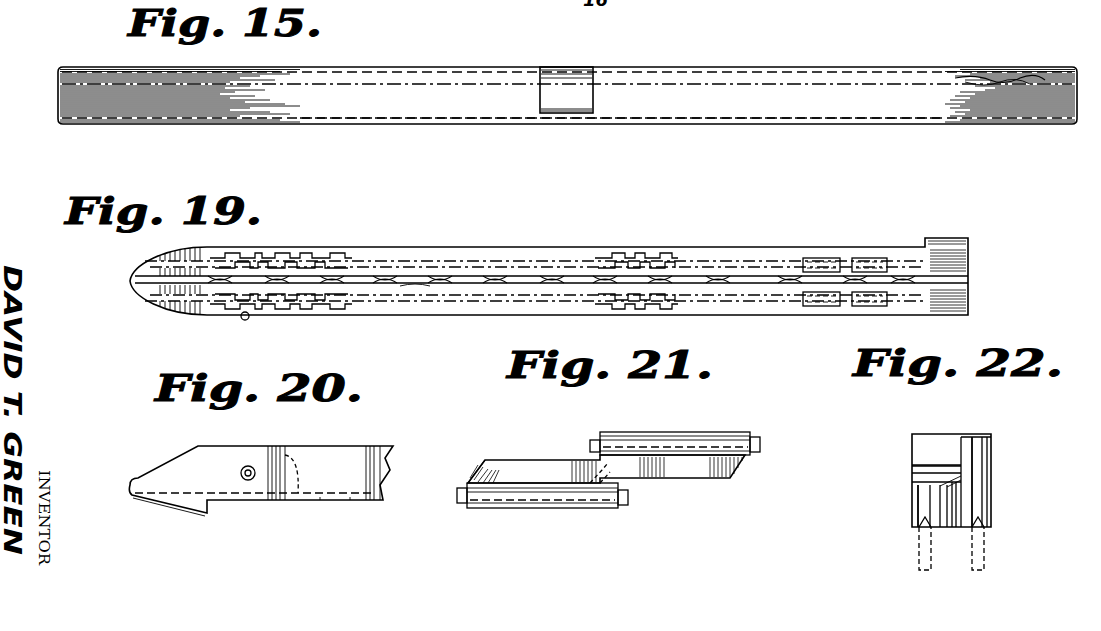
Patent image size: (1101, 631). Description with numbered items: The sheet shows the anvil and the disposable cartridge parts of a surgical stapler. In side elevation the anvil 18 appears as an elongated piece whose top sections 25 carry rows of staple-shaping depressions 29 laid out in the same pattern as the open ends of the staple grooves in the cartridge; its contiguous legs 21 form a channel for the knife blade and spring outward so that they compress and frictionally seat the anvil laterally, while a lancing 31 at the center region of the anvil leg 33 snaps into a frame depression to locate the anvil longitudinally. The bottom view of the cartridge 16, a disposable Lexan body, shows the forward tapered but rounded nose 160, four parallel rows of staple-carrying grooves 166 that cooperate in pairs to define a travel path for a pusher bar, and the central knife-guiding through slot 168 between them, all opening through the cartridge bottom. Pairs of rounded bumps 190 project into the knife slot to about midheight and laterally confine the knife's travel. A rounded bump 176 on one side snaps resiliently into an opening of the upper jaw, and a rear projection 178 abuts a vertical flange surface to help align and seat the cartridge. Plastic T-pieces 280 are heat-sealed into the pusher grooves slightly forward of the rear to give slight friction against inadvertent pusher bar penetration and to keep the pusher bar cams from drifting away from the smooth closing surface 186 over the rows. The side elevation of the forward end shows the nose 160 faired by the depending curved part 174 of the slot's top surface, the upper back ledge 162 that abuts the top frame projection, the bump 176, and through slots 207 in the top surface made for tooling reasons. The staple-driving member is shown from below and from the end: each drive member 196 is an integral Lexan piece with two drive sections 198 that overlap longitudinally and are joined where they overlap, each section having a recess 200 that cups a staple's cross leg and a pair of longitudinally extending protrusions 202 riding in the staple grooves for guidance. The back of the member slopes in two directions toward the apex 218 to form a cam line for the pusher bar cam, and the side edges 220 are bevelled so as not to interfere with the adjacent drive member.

In FIG. 15, the anvil 18 is at (388, 62).
In FIG. 15, the top sections 25 is at (468, 66).
In FIG. 15, the lancing 31 is at (568, 96).
In FIG. 15, the anvil leg 33 is at (718, 100).
In FIG. 15, the legs 21 is at (815, 116).
In FIG. 15, the staple-shaping depressions 29 is at (1022, 75).
In FIG. 19, the cartridge 16 is at (410, 244).
In FIG. 19, the nose 160 is at (128, 281).
In FIG. 20, the nose 160 is at (130, 483).
In FIG. 19, the staple-carrying grooves 166 is at (308, 250).
In FIG. 19, the knife-guiding through slot 168 is at (415, 285).
In FIG. 19, the rounded bump 176 is at (245, 320).
In FIG. 20, the rounded bump 176 is at (250, 468).
In FIG. 19, the projection 178 is at (945, 243).
In FIG. 19, the bumps 190 is at (790, 277).
In FIG. 19, the T-pieces 280 is at (870, 257).
In FIG. 20, the depending curved part 174 is at (136, 497).
In FIG. 20, the upper back ledge 162 is at (210, 505).
In FIG. 20, the closing surface 186 is at (298, 475).
In FIG. 20, the through slots 207 is at (352, 500).
In FIG. 21, the drive member 196 is at (542, 458).
In FIG. 22, the drive member 196 is at (905, 443).
In FIG. 21, the drive sections 198 is at (530, 508).
In FIG. 22, the drive sections 198 is at (912, 468).
In FIG. 21, the recess 200 is at (548, 502).
In FIG. 22, the recess 200 is at (924, 526).
In FIG. 21, the protrusions 202 is at (460, 497).
In FIG. 22, the protrusions 202 is at (920, 508).
In FIG. 21, the apex 218 is at (598, 485).
In FIG. 22, the apex 218 is at (940, 433).
In FIG. 21, the side edges 220 is at (476, 476).